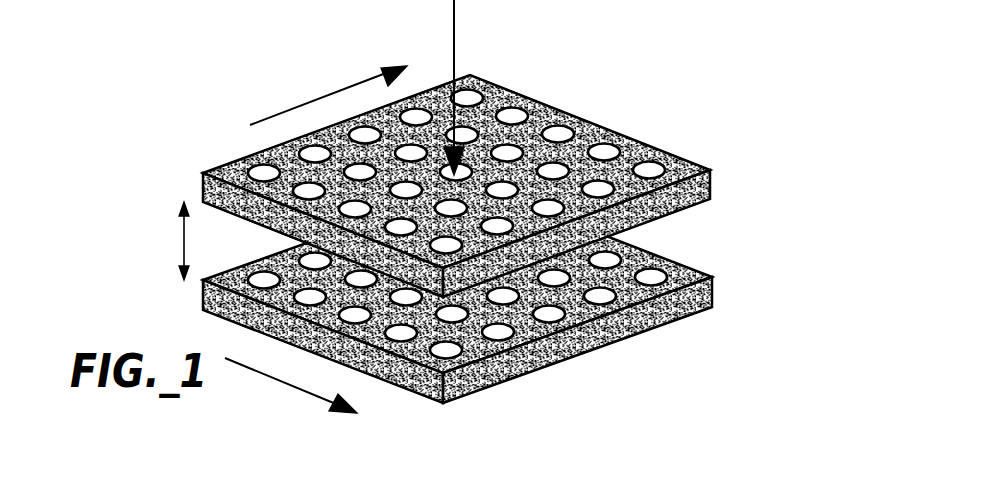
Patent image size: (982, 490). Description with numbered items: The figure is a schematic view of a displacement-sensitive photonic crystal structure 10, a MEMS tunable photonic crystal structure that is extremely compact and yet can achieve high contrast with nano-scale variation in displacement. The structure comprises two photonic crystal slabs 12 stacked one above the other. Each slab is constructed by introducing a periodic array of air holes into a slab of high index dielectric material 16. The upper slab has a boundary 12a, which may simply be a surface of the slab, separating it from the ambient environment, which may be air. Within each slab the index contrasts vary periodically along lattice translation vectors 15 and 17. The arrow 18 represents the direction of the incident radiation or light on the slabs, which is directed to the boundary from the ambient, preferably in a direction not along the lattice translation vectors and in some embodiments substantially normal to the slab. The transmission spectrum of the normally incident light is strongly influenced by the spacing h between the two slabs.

The displacement-sensitive photonic crystal structure 10 is at (496, 209).
The photonic crystal slab 12 is at (493, 239).
The boundary 12a is at (640, 143).
The lattice translation vector 15 is at (312, 104).
The high index dielectric material 16 is at (673, 310).
The lattice translation vector 17 is at (290, 388).
The arrow 18 is at (455, 14).
The spacing h is at (177, 241).